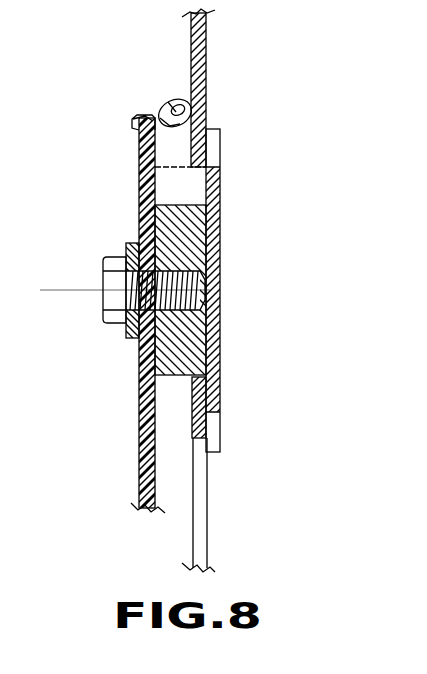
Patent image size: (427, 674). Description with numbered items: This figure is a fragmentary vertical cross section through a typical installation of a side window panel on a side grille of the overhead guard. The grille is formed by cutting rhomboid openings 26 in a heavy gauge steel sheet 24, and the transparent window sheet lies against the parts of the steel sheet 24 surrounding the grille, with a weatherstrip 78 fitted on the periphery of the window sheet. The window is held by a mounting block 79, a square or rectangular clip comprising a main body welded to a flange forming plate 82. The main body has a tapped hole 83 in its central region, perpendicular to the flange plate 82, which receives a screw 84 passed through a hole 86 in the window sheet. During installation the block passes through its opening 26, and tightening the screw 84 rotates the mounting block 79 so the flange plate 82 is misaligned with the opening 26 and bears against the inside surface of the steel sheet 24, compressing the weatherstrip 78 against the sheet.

The steel sheet 24 is at (197, 50).
The weatherstrip 78 is at (173, 102).
The flange forming plate 82 is at (213, 178).
The opening 26 is at (198, 188).
The screw 84 is at (104, 258).
The hole 86 is at (145, 295).
The tapped hole 83 is at (176, 311).
The mounting block 79 is at (220, 322).